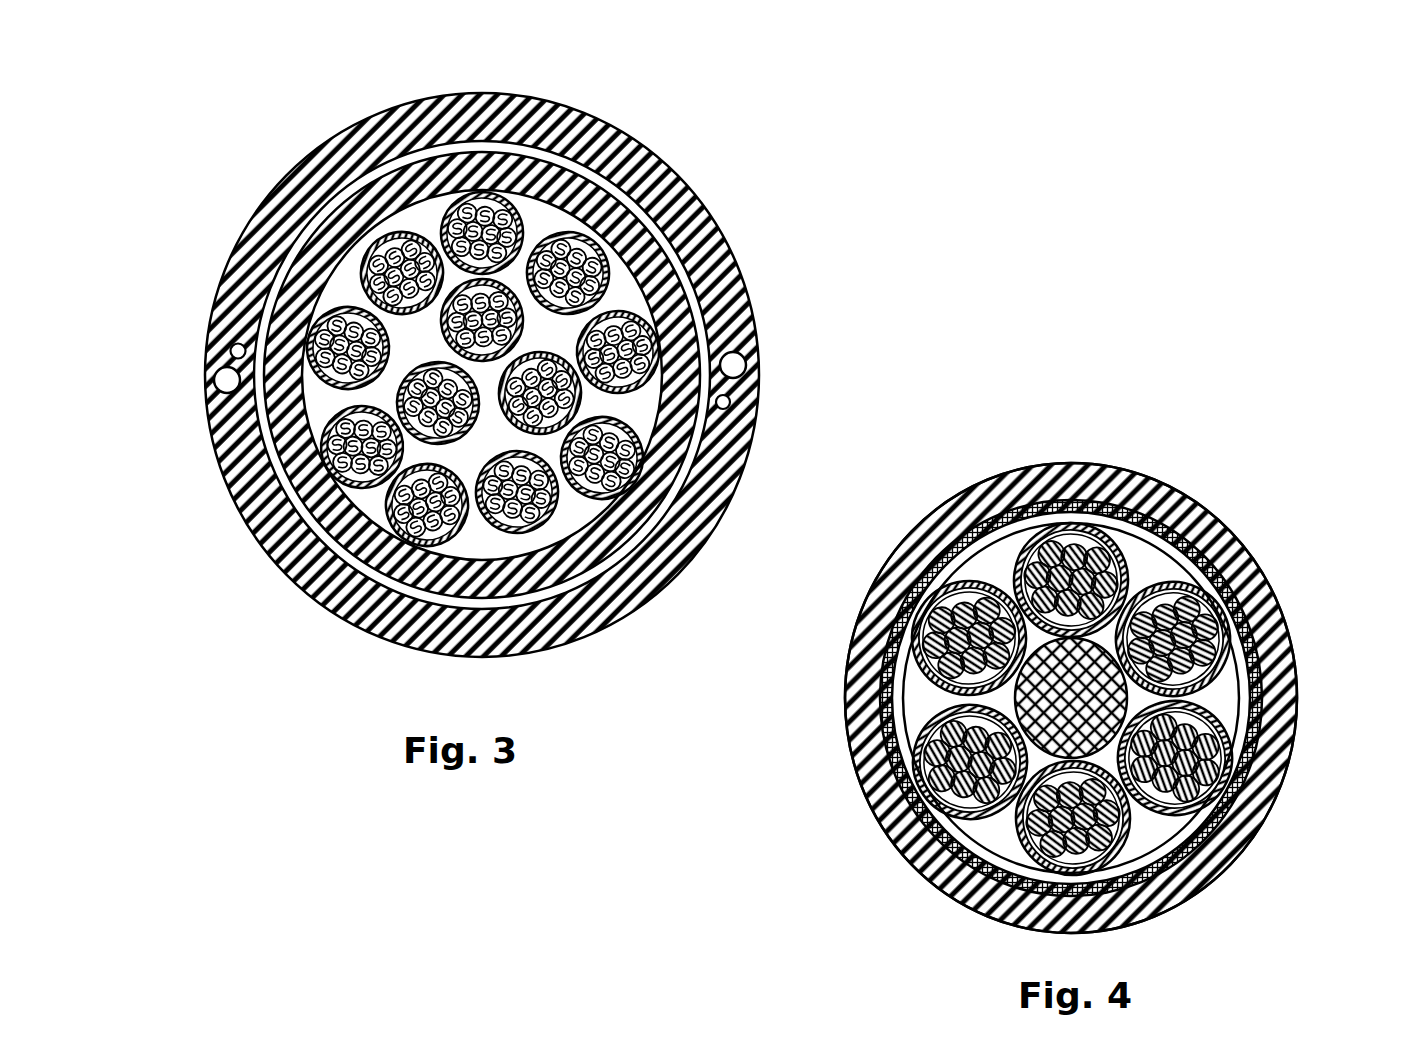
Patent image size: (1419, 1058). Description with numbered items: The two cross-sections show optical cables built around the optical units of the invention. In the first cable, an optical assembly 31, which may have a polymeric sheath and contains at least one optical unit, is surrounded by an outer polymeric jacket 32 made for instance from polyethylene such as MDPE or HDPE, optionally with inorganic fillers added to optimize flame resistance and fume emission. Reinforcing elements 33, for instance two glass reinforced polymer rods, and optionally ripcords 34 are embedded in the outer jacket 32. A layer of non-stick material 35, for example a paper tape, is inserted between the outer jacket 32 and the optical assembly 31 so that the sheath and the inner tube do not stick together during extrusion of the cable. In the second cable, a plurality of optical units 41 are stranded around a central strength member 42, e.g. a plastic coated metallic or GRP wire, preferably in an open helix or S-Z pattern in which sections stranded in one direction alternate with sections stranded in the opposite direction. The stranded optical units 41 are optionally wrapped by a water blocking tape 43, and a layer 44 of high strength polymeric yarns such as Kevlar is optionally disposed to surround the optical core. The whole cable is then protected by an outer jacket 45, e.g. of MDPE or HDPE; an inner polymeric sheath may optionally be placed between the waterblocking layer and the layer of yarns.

In FIG. 3, the optical assembly 31 is at (273, 352).
In FIG. 3, the outer polymeric jacket 32 is at (697, 229).
In FIG. 3, the reinforcing elements 33 is at (746, 363).
In FIG. 3, the ripcords 34 is at (730, 404).
In FIG. 3, the layer of non-stick material 35 is at (313, 528).
In FIG. 4, the optical units 41 is at (925, 673).
In FIG. 4, the central strength member 42 is at (935, 778).
In FIG. 4, the water blocking tape 43 is at (1248, 678).
In FIG. 4, the layer of high strength polymeric yarns 44 is at (1288, 748).
In FIG. 4, the outer jacket 45 is at (1263, 599).